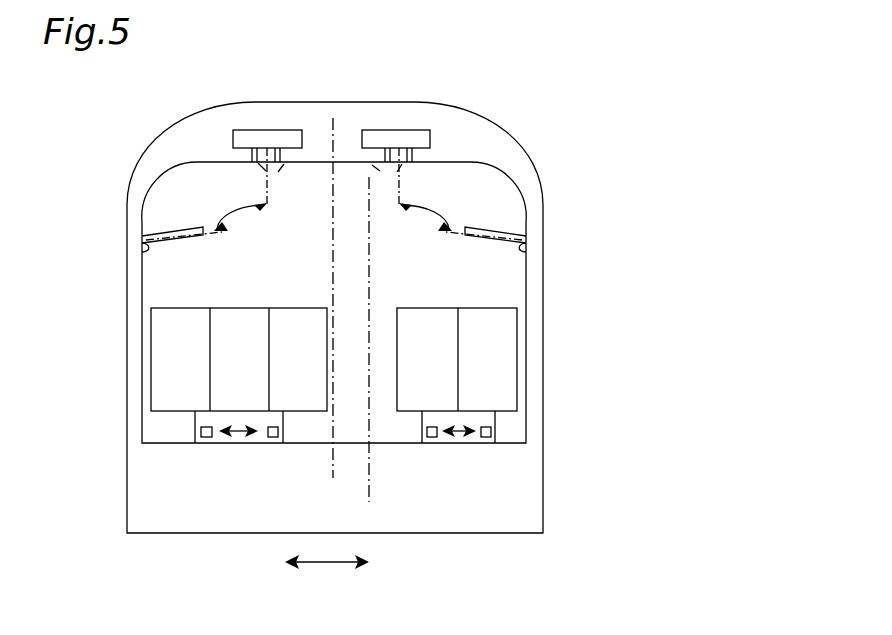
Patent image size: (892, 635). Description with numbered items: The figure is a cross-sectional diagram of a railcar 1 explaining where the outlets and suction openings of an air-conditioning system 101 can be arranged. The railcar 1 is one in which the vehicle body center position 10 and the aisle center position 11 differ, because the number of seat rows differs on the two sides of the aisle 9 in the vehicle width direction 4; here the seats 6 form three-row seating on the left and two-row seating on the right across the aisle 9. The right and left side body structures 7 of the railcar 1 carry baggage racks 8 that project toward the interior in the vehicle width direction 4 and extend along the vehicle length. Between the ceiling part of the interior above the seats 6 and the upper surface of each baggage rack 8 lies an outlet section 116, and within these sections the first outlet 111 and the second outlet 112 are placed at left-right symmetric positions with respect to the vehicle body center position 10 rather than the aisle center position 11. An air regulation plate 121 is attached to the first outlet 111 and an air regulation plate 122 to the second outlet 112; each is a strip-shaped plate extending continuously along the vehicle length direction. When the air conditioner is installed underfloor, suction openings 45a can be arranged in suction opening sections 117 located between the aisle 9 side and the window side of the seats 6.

The railcar 1 is at (546, 417).
The vehicle width direction 4 is at (327, 563).
The seats 6 is at (168, 365).
The side body structures 7 is at (142, 297).
The baggage racks 8 is at (145, 244).
The aisle 9 is at (390, 325).
The vehicle body center position 10 is at (331, 145).
The aisle center position 11 is at (368, 203).
The suction openings 45a is at (272, 440).
The air-conditioning system 101 is at (678, 138).
The first outlet 111 is at (272, 130).
The second outlet 112 is at (410, 130).
The outlet section 116 is at (230, 212).
The suction opening sections 117 is at (237, 433).
The air regulation plate 121 is at (283, 168).
The air regulation plate 122 is at (390, 168).